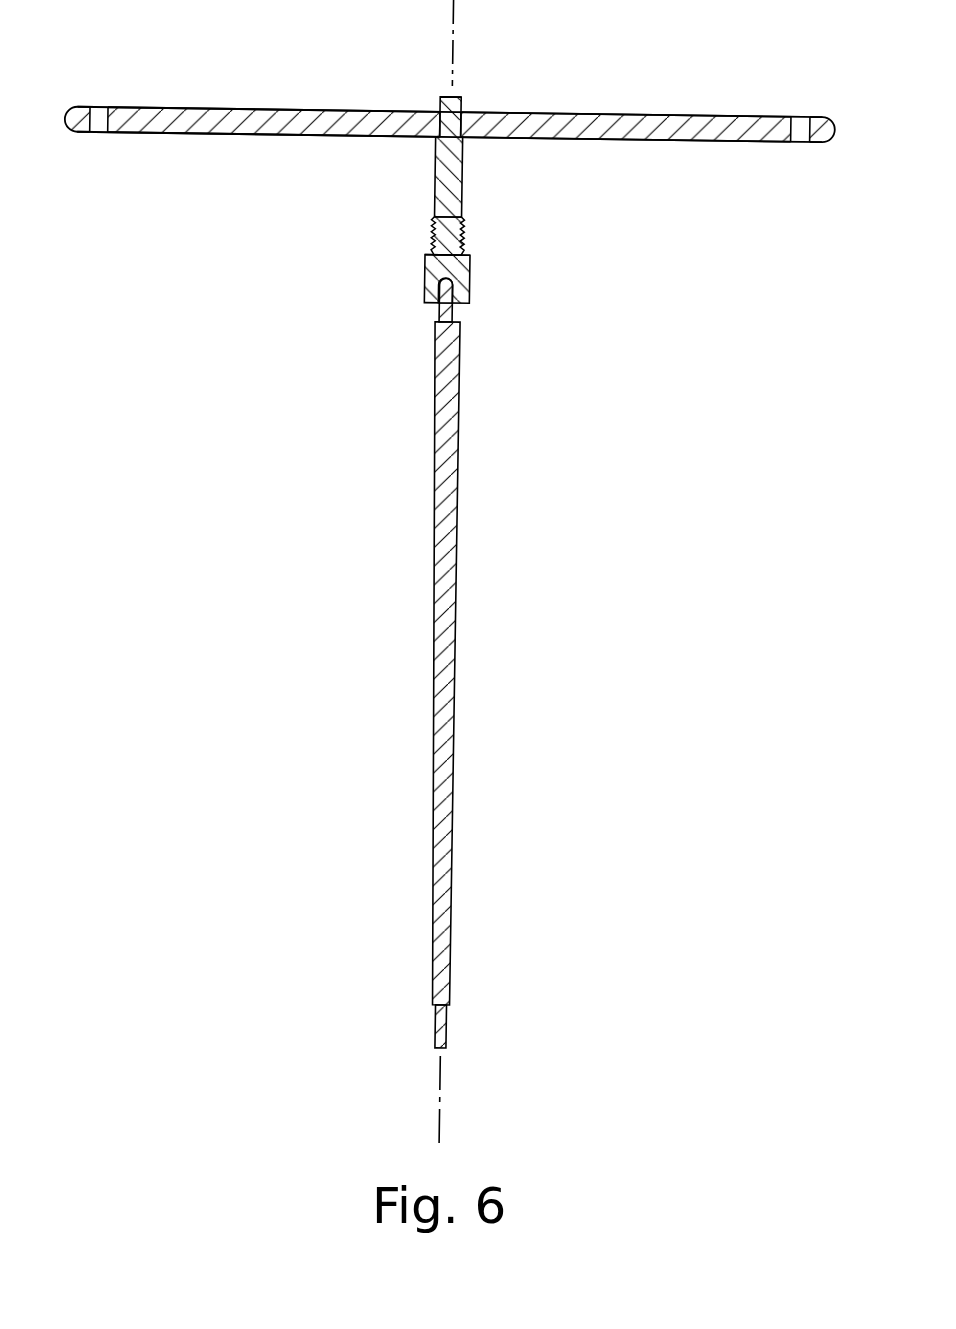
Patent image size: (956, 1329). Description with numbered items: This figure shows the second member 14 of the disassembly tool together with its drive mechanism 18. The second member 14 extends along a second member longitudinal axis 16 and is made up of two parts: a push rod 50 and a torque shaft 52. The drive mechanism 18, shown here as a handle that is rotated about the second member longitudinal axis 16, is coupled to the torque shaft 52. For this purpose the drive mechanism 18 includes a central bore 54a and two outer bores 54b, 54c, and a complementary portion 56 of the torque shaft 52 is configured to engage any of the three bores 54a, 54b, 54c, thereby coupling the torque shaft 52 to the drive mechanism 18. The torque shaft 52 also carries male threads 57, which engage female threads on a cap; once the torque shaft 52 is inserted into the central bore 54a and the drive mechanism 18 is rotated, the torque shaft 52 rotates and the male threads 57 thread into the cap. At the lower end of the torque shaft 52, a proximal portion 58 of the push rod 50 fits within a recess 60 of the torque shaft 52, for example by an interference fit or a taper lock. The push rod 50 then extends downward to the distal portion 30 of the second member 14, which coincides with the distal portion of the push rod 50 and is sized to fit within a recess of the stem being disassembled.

The second member 14 is at (496, 297).
The second member longitudinal axis 16 is at (452, 61).
The drive mechanism 18 is at (650, 111).
The distal portion 30 is at (460, 1027).
The push rod 50 is at (457, 546).
The torque shaft 52 is at (463, 197).
The central bore 54a is at (462, 110).
The outer bore 54b is at (801, 104).
The outer bore 54c is at (104, 104).
The complementary portion 56 is at (440, 110).
The male threads 57 is at (466, 233).
The proximal portion 58 is at (458, 306).
The recess 60 is at (441, 285).